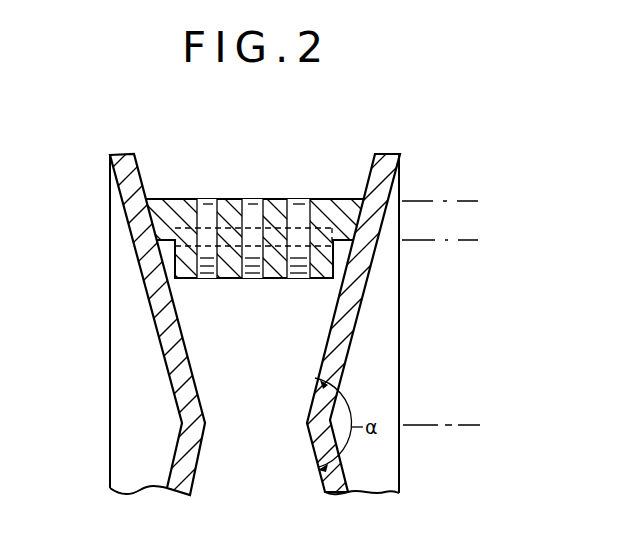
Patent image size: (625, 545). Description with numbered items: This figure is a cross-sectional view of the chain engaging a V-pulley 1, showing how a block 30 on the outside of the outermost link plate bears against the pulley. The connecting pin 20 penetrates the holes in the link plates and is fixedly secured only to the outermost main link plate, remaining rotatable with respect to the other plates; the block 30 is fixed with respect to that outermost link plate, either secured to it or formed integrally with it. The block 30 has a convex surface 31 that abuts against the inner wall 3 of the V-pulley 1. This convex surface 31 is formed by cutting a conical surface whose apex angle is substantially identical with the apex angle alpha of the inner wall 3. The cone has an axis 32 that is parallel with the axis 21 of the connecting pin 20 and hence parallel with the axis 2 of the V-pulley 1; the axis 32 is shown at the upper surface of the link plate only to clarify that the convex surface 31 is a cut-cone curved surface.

The V-pulley 1 is at (388, 325).
The axis of the V-pulley 2 is at (462, 425).
The inner wall of the V-pulley 3 is at (183, 331).
The connecting pin 20 is at (204, 228).
The axis of the connecting pin 21 is at (452, 240).
The block 30 is at (164, 223).
The convex surface 31 is at (360, 203).
The axis of the cone 32 is at (453, 201).